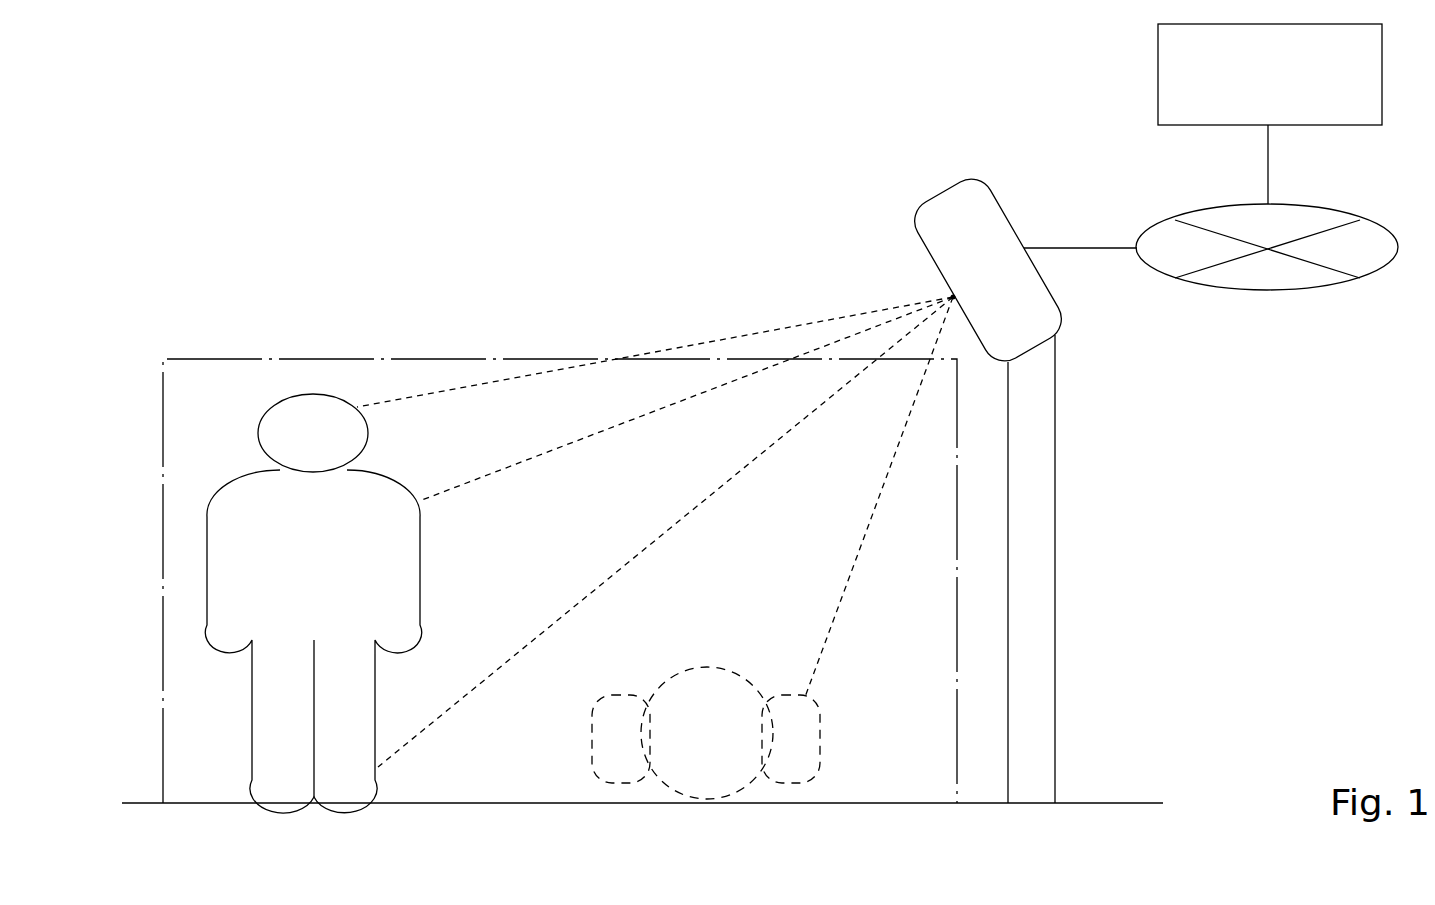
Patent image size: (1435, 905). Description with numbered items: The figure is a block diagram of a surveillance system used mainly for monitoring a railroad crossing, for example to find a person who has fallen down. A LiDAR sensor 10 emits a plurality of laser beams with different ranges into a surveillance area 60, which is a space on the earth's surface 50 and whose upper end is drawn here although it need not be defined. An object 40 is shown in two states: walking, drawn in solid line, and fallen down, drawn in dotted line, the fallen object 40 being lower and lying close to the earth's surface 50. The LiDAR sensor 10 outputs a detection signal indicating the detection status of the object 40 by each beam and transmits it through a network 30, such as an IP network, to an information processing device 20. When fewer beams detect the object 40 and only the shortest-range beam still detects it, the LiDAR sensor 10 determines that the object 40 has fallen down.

The LiDAR sensor 10 is at (930, 200).
The information processing device 20 is at (1158, 82).
The network 30 is at (1266, 291).
The object 40 is at (422, 545).
The earth's surface 50 is at (1075, 800).
The surveillance area 60 is at (305, 357).